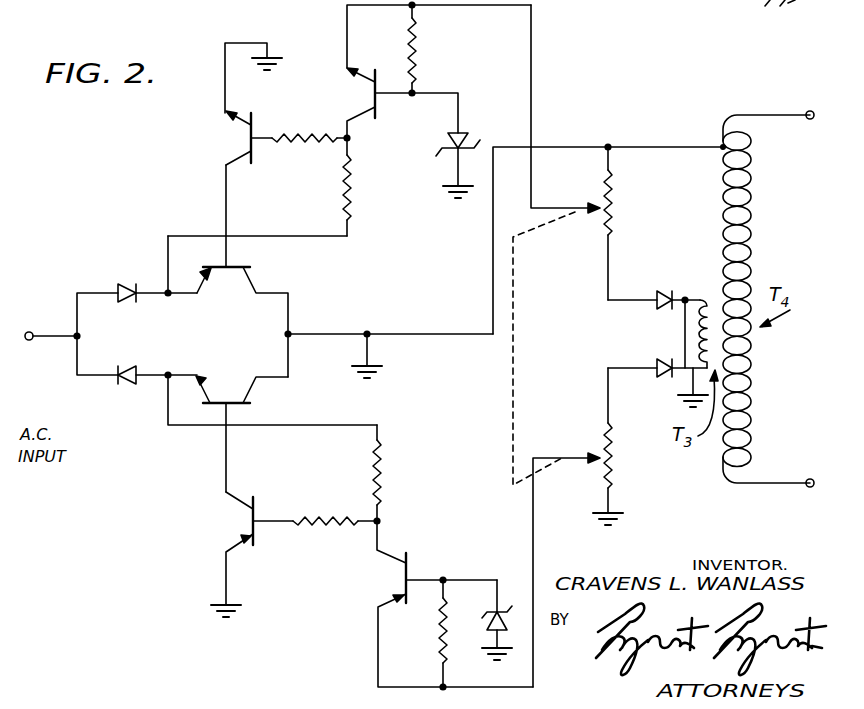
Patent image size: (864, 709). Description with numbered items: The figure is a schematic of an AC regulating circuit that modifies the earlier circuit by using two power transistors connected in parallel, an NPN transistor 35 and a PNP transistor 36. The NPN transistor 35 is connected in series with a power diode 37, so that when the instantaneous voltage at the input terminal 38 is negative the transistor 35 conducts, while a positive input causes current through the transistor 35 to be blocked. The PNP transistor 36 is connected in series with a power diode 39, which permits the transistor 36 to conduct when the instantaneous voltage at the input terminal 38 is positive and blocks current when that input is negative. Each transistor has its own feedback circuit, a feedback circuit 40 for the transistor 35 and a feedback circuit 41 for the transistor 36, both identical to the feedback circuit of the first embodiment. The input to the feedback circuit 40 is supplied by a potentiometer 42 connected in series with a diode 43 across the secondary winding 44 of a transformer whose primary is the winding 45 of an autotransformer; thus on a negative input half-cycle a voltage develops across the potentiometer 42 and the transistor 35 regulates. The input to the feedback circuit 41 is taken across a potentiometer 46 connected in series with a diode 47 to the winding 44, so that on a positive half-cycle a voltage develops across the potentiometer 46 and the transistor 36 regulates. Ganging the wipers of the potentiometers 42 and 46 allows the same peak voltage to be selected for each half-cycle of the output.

The NPN transistor 35 is at (230, 406).
The PNP transistor 36 is at (251, 265).
The power diode 37 is at (132, 368).
The input terminal 38 is at (48, 306).
The power diode 39 is at (116, 258).
The feedback circuit 40 is at (372, 557).
The feedback circuit 41 is at (378, 119).
The potentiometer 42 is at (604, 458).
The diode 43 is at (665, 378).
The secondary winding 44 is at (707, 299).
The winding 45 is at (745, 272).
The potentiometer 46 is at (603, 213).
The diode 47 is at (660, 289).